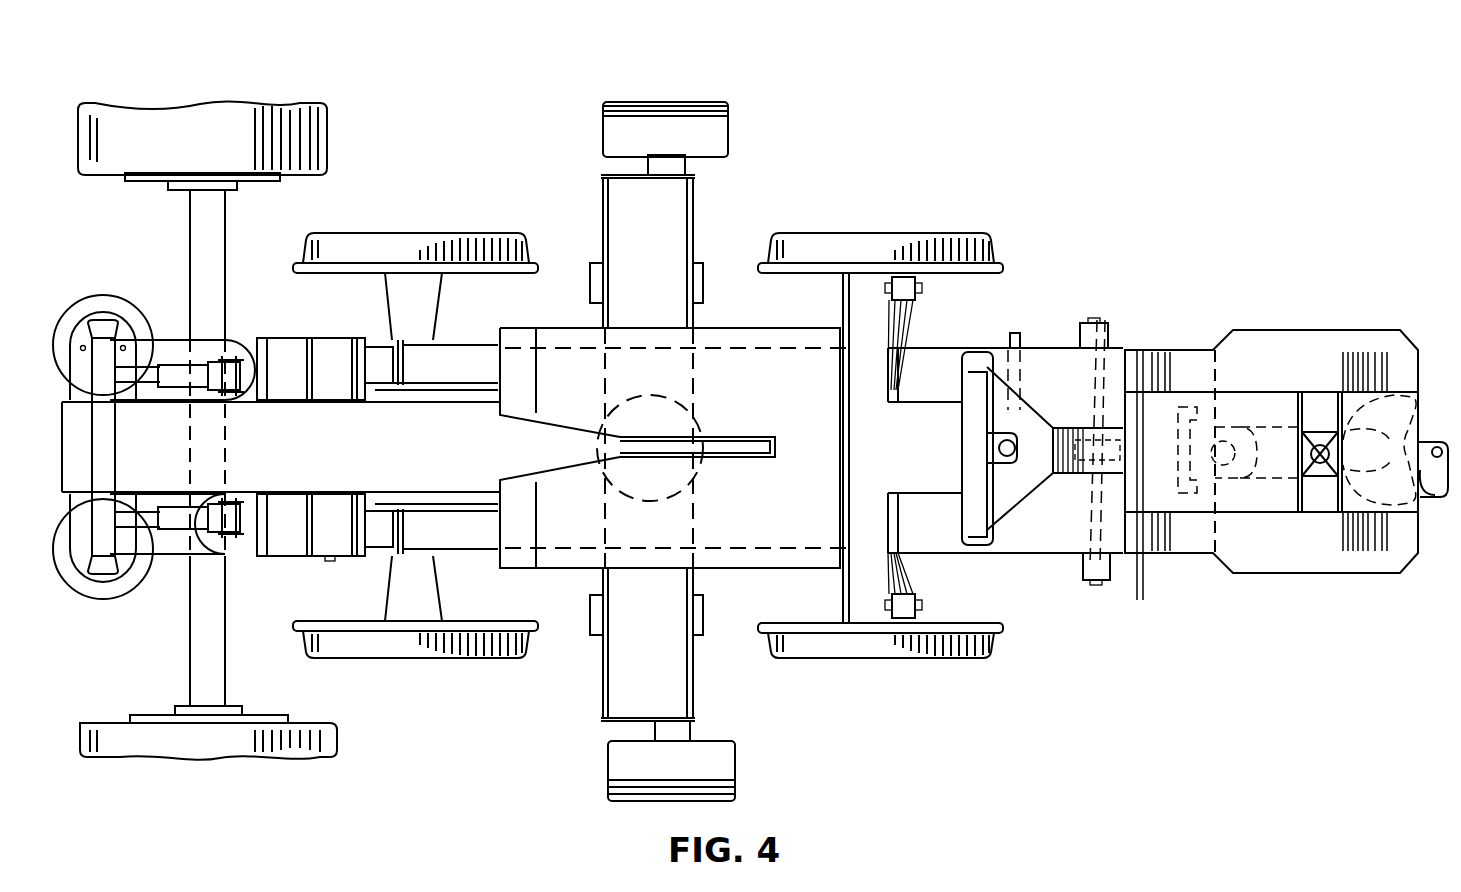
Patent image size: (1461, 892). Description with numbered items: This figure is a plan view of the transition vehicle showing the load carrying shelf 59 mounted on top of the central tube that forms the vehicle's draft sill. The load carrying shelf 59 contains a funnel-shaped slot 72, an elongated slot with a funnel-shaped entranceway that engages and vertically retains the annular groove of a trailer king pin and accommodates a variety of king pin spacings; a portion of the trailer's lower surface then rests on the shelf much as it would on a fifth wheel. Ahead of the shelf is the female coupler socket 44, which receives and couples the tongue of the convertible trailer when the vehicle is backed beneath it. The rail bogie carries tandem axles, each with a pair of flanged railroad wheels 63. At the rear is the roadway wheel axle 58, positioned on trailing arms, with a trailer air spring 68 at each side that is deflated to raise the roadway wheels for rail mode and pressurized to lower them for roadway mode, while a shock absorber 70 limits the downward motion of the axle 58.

The female coupler socket 44 is at (1027, 417).
The wheel axle 58 is at (227, 677).
The load carrying shelf 59 is at (786, 497).
The flanged railroad wheels 63 is at (502, 643).
The trailer air spring 68 is at (105, 588).
The shock absorber 70 is at (168, 372).
The funnel-shaped slot 72 is at (755, 437).